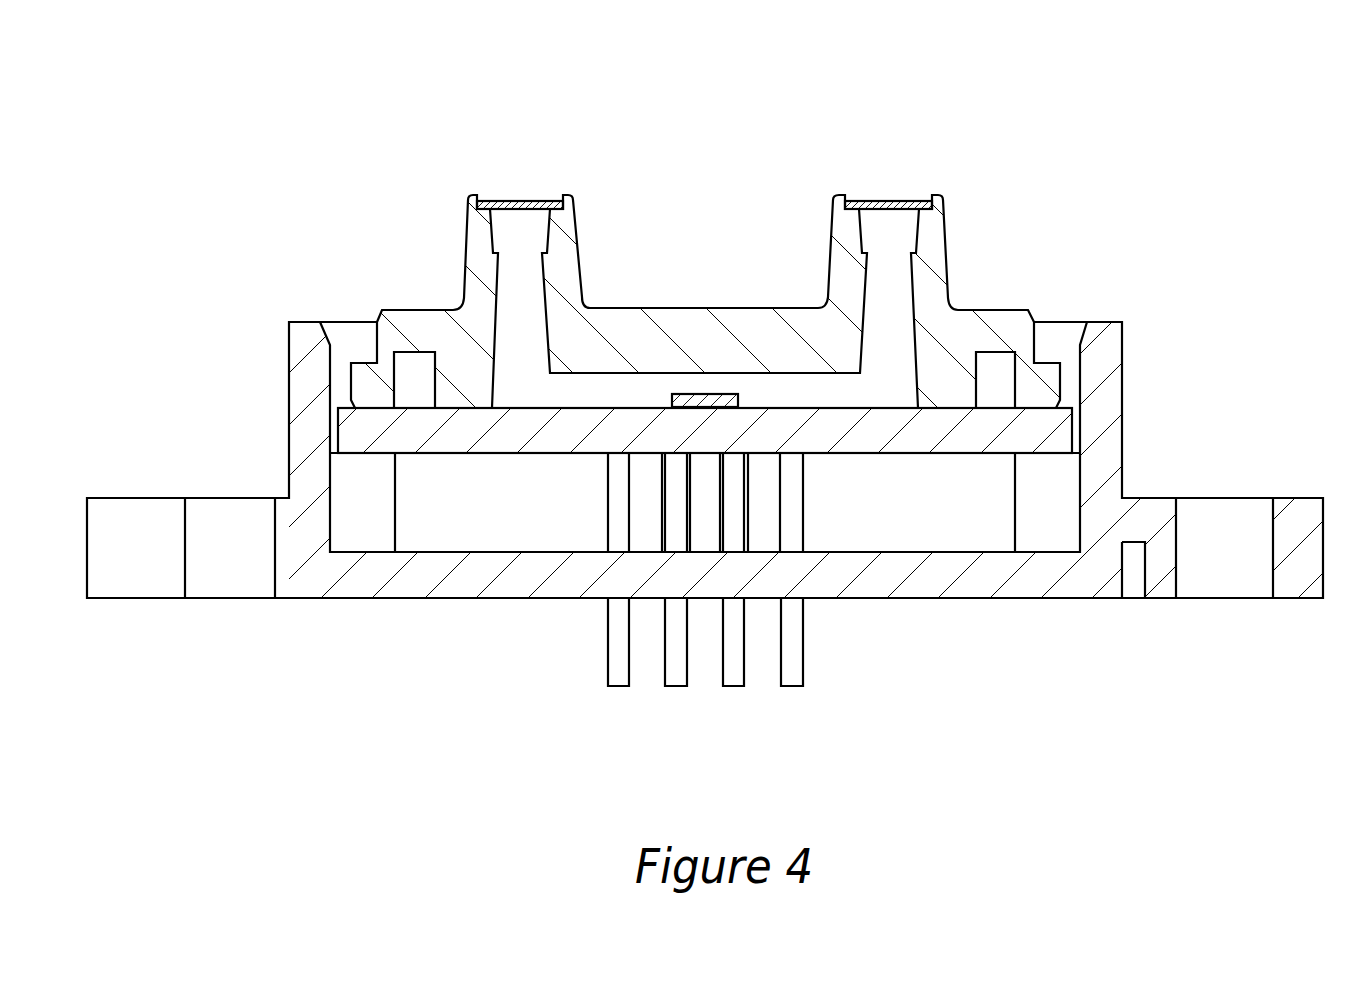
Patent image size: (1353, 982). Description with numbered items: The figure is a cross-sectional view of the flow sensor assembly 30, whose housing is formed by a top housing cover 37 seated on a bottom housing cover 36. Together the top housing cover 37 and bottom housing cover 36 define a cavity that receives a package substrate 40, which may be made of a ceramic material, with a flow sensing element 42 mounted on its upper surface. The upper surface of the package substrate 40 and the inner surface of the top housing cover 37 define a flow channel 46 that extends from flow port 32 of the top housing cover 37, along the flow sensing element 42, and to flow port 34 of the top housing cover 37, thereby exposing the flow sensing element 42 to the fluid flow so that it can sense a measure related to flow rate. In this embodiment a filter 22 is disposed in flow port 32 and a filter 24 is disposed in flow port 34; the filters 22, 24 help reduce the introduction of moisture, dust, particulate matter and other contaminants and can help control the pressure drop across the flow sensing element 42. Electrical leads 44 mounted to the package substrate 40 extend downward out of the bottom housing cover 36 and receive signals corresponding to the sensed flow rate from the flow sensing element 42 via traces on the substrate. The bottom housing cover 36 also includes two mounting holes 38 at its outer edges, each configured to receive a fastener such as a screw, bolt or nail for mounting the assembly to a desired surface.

The filter 22 is at (521, 204).
The filter 24 is at (886, 204).
The flow sensor assembly 30 is at (1121, 106).
The flow port 32 is at (573, 243).
The flow port 34 is at (940, 241).
The bottom housing cover 36 is at (1110, 400).
The top housing cover 37 is at (698, 314).
The mounting holes 38 is at (223, 510).
The package substrate 40 is at (993, 422).
The flow sensing element 42 is at (685, 400).
The electrical leads 44 is at (732, 670).
The flow channel 46 is at (818, 393).